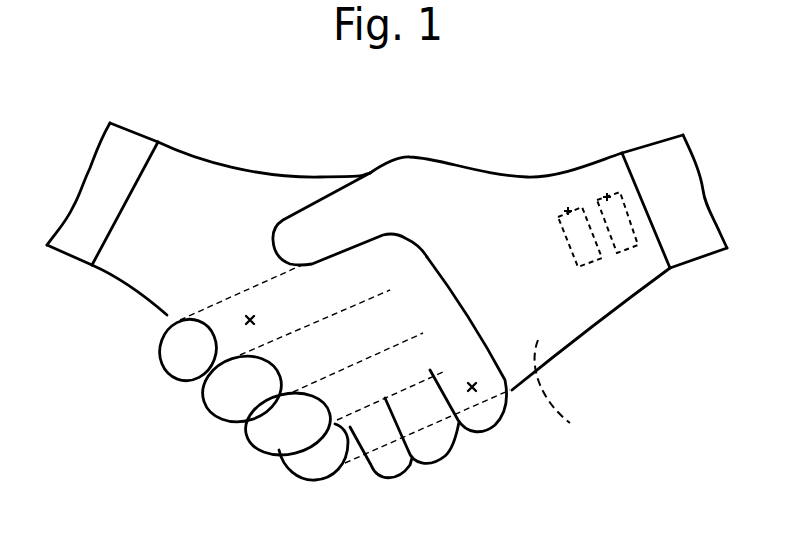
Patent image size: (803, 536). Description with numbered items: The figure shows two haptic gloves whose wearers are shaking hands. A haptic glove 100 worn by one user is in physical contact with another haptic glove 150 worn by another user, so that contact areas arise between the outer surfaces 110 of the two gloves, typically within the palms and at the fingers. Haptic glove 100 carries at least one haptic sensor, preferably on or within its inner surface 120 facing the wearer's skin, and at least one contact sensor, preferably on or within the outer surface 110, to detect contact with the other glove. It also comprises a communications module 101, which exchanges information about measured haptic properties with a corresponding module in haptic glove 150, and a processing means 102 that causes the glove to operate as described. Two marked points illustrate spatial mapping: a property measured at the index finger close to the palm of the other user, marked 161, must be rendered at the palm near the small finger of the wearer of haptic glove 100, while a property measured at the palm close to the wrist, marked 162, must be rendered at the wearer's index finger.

The haptic glove 100 is at (500, 280).
The communications module 101 is at (607, 196).
The processing means 102 is at (568, 210).
The outer surface 110 is at (587, 312).
The inner surface 120 is at (576, 389).
The haptic glove 150 is at (241, 150).
The measurement location at index finger 161 is at (472, 393).
The measurement location at palm 162 is at (243, 318).